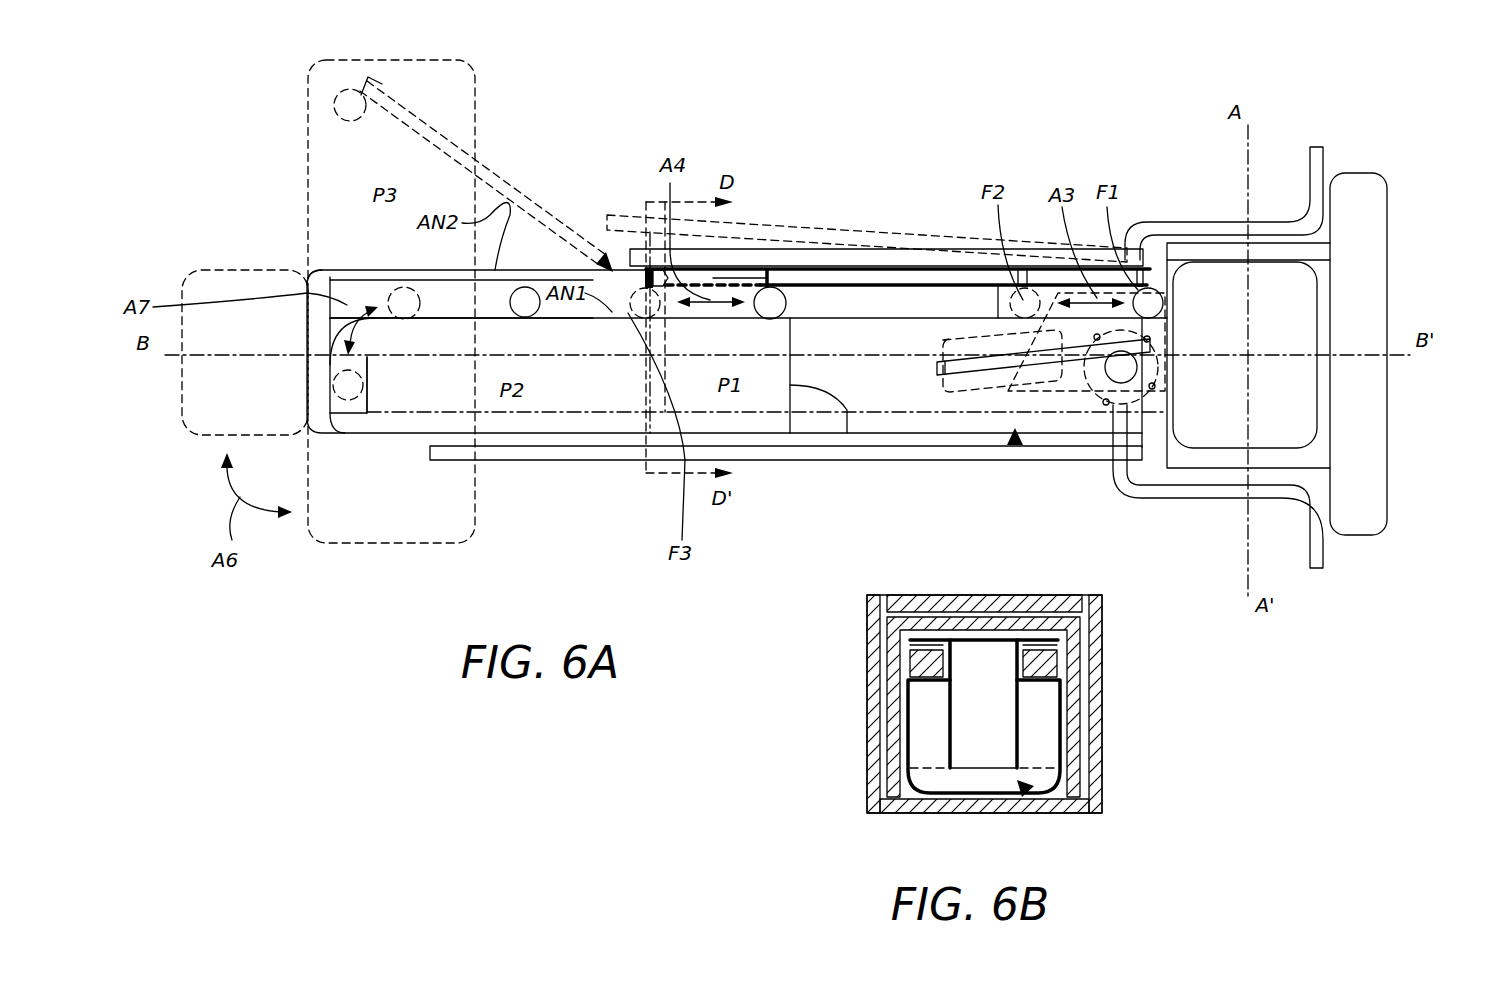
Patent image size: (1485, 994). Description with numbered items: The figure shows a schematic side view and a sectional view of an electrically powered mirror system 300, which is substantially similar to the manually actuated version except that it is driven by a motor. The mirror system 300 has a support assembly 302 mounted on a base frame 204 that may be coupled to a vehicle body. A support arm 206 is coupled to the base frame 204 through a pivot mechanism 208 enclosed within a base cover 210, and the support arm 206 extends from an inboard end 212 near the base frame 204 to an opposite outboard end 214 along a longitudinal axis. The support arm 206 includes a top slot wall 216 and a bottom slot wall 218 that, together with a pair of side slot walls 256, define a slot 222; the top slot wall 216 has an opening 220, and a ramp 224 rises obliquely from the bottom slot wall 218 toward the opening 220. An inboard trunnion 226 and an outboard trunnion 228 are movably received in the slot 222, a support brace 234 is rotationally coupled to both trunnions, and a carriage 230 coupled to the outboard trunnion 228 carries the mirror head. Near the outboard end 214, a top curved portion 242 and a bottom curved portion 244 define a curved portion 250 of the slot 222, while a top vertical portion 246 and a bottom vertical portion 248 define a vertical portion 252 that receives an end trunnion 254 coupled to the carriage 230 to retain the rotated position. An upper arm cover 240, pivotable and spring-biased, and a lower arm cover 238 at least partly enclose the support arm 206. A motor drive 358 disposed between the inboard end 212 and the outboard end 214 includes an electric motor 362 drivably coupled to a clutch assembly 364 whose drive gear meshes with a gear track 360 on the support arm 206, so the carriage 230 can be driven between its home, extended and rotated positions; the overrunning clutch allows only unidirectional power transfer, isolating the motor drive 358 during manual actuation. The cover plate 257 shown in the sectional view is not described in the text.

In FIG. 6A, the mirror system 300 is at (1060, 55).
In FIG. 6A, the support assembly 302 is at (1040, 162).
In FIG. 6A, the base frame 204 is at (1365, 200).
In FIG. 6A, the support arm 206 is at (905, 435).
In FIG. 6B, the support arm 206 is at (1063, 787).
In FIG. 6A, the pivot mechanism 208 is at (1230, 432).
In FIG. 6A, the base cover 210 is at (1280, 496).
In FIG. 6A, the inboard end 212 is at (1158, 455).
In FIG. 6A, the outboard end 214 is at (302, 440).
In FIG. 6A, the top slot wall 216 is at (740, 280).
In FIG. 6B, the top slot wall 216 is at (930, 643).
In FIG. 6A, the bottom slot wall 218 is at (747, 318).
In FIG. 6B, the bottom slot wall 218 is at (907, 690).
In FIG. 6A, the opening 220 is at (610, 260).
In FIG. 6A, the slot 222 is at (743, 307).
In FIG. 6B, the slot 222 is at (910, 638).
In FIG. 6A, the ramp 224 is at (612, 313).
In FIG. 6A, the inboard trunnion 226 is at (1020, 288).
In FIG. 6A, the outboard trunnion 228 is at (343, 90).
In FIG. 6B, the outboard trunnion 228 is at (920, 663).
In FIG. 6A, the carriage 230 is at (847, 410).
In FIG. 6B, the carriage 230 is at (893, 713).
In FIG. 6A, the support brace 234 is at (912, 278).
In FIG. 6B, the lower arm cover 238 is at (867, 763).
In FIG. 6A, the upper arm cover 240 is at (767, 262).
In FIG. 6B, the upper arm cover 240 is at (975, 605).
In FIG. 6A, the top curved portion 242 is at (352, 312).
In FIG. 6A, the bottom curved portion 244 is at (418, 345).
In FIG. 6A, the top vertical portion 246 is at (330, 395).
In FIG. 6A, the bottom vertical portion 248 is at (367, 403).
In FIG. 6A, the curved portion 250 is at (330, 313).
In FIG. 6A, the vertical portion 252 is at (338, 372).
In FIG. 6A, the end trunnion 254 is at (393, 290).
In FIG. 6B, the side slot wall 256 is at (1003, 660).
In FIG. 6B, the cover plate 257 is at (1050, 607).
In FIG. 6A, the motor drive 358 is at (1018, 444).
In FIG. 6B, the motor drive 358 is at (1025, 790).
In FIG. 6A, the gear track 360 is at (948, 445).
In FIG. 6A, the electric motor 362 is at (1157, 367).
In FIG. 6A, the clutch assembly 364 is at (1135, 372).